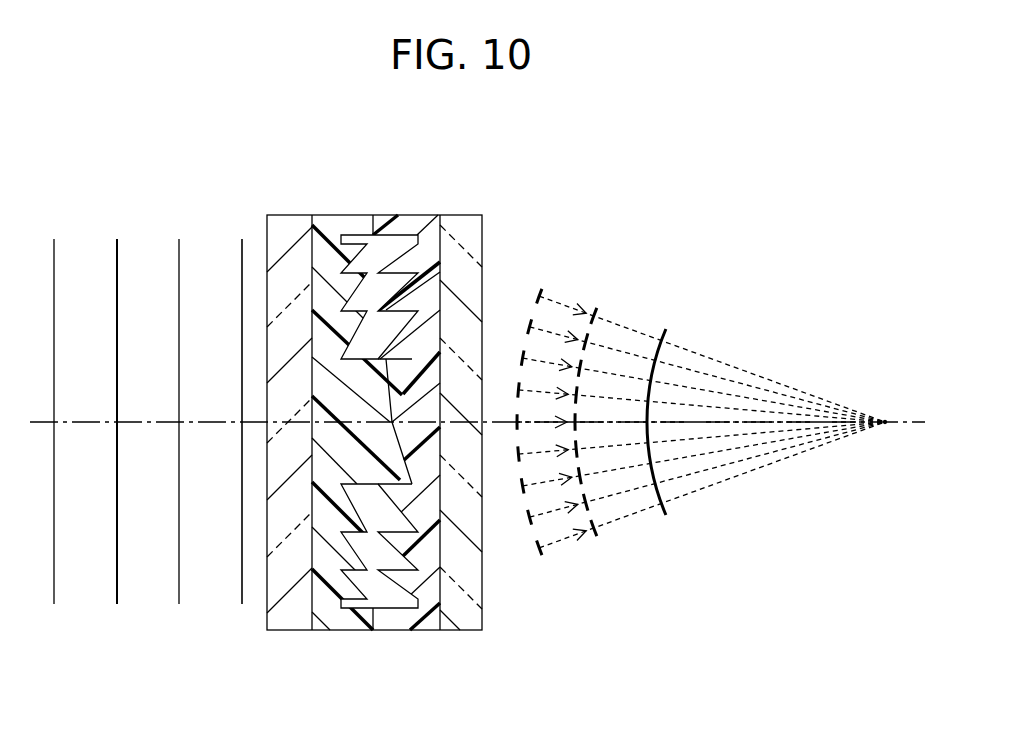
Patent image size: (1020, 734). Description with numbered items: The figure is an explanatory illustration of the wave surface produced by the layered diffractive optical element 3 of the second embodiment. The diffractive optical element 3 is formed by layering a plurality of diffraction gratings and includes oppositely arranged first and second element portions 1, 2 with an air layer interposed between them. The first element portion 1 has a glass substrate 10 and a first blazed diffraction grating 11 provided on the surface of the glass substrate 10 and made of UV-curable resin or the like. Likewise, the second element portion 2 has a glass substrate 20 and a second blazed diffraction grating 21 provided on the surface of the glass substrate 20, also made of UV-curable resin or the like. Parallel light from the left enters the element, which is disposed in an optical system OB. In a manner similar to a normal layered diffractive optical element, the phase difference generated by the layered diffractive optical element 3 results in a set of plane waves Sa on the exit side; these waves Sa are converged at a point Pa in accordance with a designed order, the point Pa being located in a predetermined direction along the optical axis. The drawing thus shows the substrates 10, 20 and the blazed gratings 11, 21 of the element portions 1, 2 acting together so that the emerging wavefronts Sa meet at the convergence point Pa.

The first element portion 1 is at (333, 378).
The second element portion 2 is at (429, 378).
The glass substrate 10 is at (282, 222).
The first blazed diffraction grating 11 is at (357, 398).
The glass substrate 20 is at (461, 398).
The second blazed diffraction grating 21 is at (407, 222).
The layered diffractive optical element 3 is at (412, 362).
The plane waves Sa is at (540, 290).
The point Pa is at (891, 420).
The optical system OB is at (40, 652).